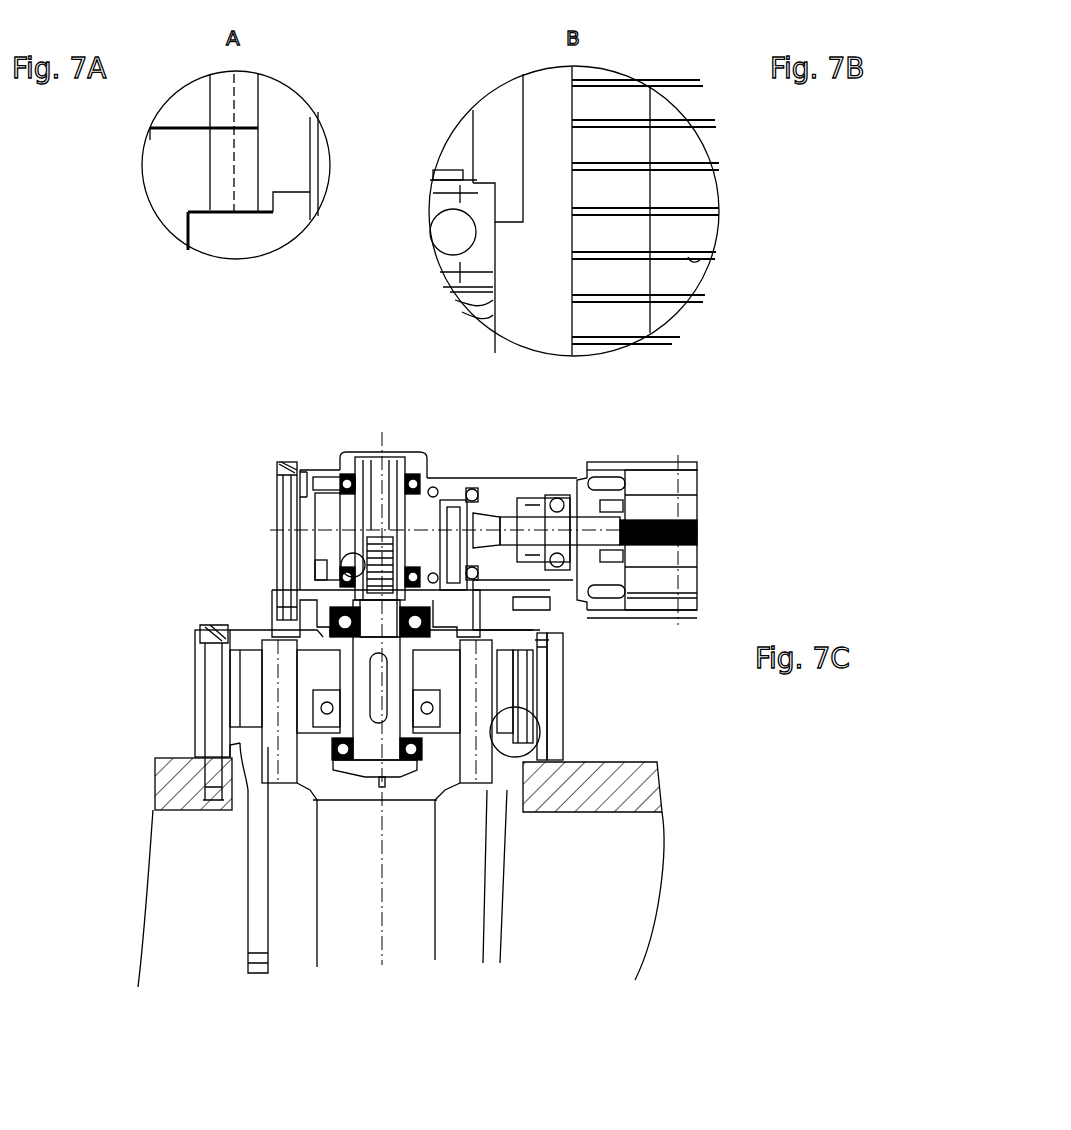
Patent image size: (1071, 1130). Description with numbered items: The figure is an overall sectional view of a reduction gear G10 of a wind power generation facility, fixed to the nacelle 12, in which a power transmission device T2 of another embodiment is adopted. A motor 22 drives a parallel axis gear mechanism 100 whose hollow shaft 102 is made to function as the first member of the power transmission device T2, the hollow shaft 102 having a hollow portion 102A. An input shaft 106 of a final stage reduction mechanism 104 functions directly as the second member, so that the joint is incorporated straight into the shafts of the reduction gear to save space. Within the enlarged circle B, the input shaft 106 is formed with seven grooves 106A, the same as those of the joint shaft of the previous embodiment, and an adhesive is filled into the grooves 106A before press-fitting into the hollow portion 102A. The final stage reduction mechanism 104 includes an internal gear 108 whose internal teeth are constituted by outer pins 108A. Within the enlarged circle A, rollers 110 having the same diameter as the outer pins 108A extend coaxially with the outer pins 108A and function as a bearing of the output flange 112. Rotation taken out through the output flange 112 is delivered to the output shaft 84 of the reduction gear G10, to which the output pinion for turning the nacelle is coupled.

In FIG. 7C, the nacelle 12 is at (640, 842).
In FIG. 7C, the motor 22 is at (640, 460).
In FIG. 7C, the output shaft 84 is at (413, 923).
In FIG. 7C, the parallel axis gear mechanism 100 is at (450, 478).
In FIG. 7B, the hollow shaft 102 is at (549, 282).
In FIG. 7C, the hollow shaft 102 is at (360, 470).
In FIG. 7C, the hollow portion 102A is at (390, 478).
In FIG. 7C, the final stage reduction mechanism 104 is at (186, 680).
In FIG. 7B, the input shaft 106 is at (683, 147).
In FIG. 7C, the input shaft 106 is at (330, 630).
In FIG. 7B, the grooves 106A is at (680, 300).
In FIG. 7C, the grooves 106A is at (360, 535).
In FIG. 7C, the internal gear 108 is at (530, 688).
In FIG. 7A, the outer pins 108A is at (247, 100).
In FIG. 7C, the outer pins 108A is at (525, 672).
In FIG. 7A, the rollers 110 is at (242, 192).
In FIG. 7C, the rollers 110 is at (523, 735).
In FIG. 7A, the output flange 112 is at (195, 183).
In FIG. 7C, the output flange 112 is at (510, 793).
In FIG. 7B, the power transmission device T2 is at (653, 85).
In FIG. 7C, the power transmission device T2 is at (328, 580).
In FIG. 7C, the reduction gear G10 is at (210, 445).
In FIG. 7C, the circle A is at (540, 710).
In FIG. 7C, the circle B is at (345, 557).